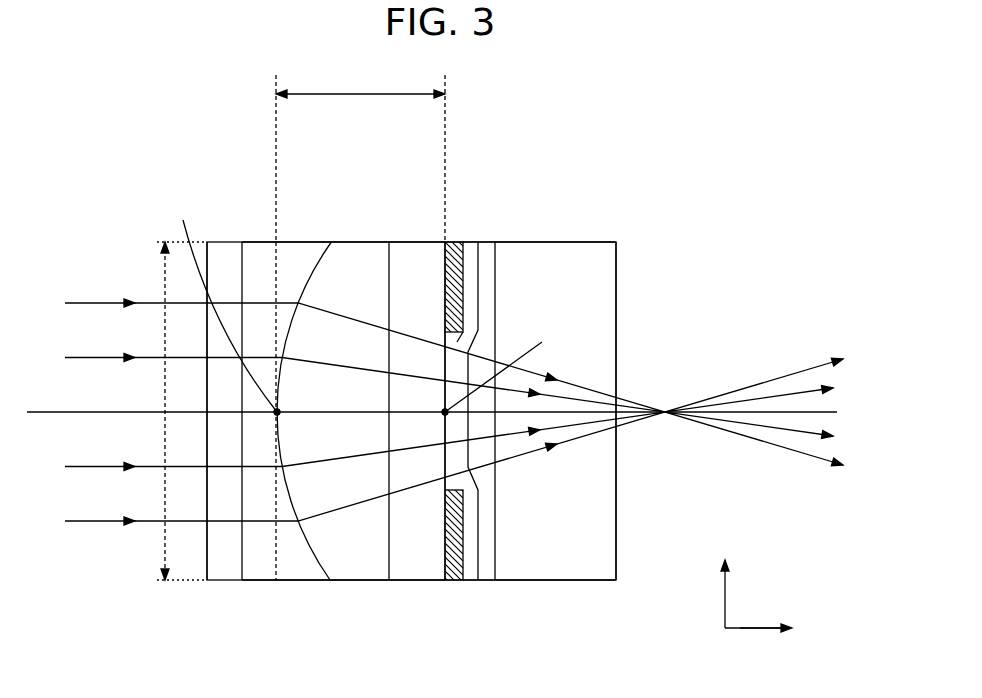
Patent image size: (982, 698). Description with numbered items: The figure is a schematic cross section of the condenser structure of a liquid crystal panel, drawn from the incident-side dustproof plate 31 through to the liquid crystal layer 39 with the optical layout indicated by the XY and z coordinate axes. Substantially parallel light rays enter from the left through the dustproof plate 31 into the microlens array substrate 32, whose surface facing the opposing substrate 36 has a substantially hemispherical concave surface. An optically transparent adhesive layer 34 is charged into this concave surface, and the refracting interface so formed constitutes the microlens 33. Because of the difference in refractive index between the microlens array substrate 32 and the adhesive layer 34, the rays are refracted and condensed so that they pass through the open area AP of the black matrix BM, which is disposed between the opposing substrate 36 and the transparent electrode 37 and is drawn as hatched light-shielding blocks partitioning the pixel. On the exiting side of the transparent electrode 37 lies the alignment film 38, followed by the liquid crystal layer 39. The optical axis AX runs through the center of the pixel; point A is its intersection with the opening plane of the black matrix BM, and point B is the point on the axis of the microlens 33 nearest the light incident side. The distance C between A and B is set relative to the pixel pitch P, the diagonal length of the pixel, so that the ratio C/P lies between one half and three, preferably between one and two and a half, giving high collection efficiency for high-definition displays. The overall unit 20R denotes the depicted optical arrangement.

The optical unit 20R is at (338, 218).
The incident-side dustproof plate 31 is at (220, 580).
The microlens array substrate 32 is at (277, 580).
The microlens 33 is at (312, 580).
The adhesive layer 34 is at (357, 580).
The opposing substrate 36 is at (418, 580).
The transparent electrode 37 is at (470, 240).
The alignment film 38 is at (487, 240).
The liquid crystal layer 39 is at (582, 580).
The black matrix BM is at (452, 580).
The open area AP is at (440, 350).
The optical axis AX is at (770, 410).
The intersection point A is at (505, 367).
The point on the optical axis of the microlens B is at (223, 300).
The distance C is at (360, 153).
The pixel pitch P is at (165, 443).
The XY axis XY is at (739, 590).
The z axis z is at (777, 628).